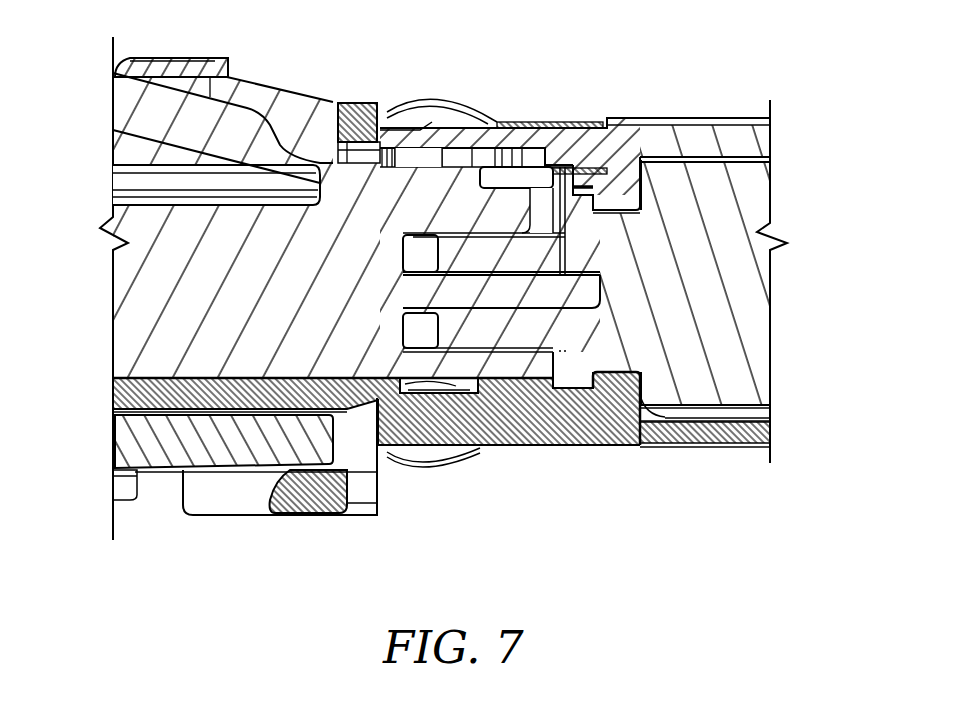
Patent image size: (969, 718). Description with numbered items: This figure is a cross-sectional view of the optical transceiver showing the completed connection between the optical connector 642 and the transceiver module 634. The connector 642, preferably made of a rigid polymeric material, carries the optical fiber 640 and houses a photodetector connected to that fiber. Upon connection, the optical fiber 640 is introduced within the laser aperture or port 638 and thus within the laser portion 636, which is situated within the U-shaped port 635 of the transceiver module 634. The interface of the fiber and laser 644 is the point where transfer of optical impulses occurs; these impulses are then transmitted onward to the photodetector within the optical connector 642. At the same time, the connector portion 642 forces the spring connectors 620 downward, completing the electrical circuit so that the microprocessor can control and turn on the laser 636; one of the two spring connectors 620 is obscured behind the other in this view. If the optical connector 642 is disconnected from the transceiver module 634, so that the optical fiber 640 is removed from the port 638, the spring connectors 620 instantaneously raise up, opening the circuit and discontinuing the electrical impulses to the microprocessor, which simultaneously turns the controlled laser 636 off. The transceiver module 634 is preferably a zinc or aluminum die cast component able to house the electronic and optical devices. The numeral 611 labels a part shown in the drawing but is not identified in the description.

The optical connector 642 is at (155, 272).
The laser aperture (port) 638 is at (443, 320).
The laser portion 636 is at (530, 330).
The optical fiber 640 is at (550, 297).
The spring connectors 620 is at (420, 380).
The interface of the fiber and laser 644 is at (580, 298).
The U-shaped port 635 is at (622, 405).
The sealing sheet 611 is at (660, 406).
The transceiver module 634 is at (753, 430).